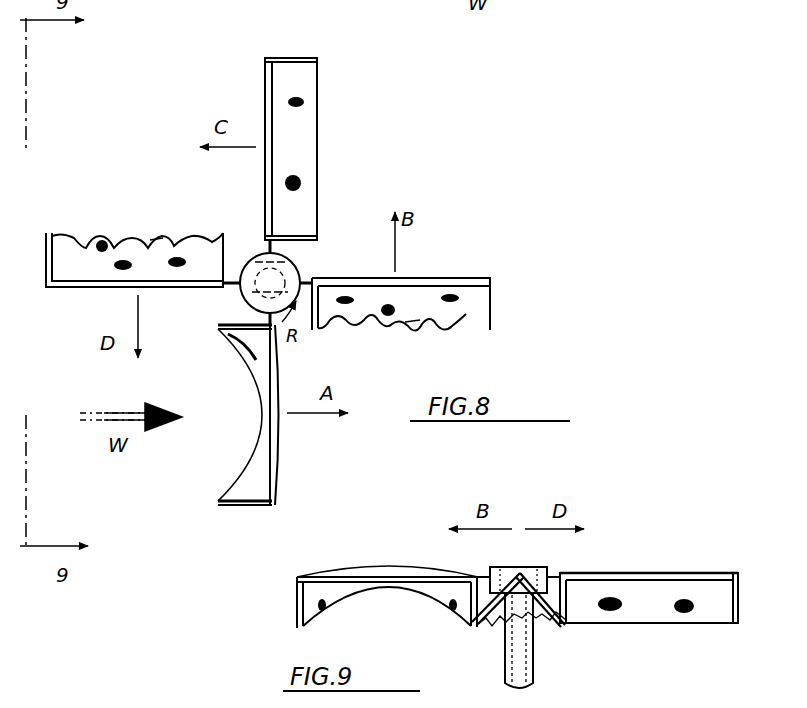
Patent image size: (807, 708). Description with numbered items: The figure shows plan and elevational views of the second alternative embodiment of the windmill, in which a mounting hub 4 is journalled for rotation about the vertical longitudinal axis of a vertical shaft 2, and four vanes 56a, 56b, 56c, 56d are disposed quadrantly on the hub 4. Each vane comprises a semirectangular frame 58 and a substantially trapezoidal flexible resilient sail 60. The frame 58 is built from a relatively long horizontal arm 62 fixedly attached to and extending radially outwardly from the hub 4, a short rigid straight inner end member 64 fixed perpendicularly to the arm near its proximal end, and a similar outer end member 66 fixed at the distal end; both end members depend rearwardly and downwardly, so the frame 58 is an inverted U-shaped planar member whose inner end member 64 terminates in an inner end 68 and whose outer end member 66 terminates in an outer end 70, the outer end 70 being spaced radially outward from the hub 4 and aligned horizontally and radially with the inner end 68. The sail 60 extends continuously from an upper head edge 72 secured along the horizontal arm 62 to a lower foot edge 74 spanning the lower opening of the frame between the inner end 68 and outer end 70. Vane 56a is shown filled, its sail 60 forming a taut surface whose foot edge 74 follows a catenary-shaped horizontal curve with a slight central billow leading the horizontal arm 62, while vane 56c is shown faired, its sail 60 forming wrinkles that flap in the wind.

In FIG. 9, the vertical shaft 2 is at (505, 668).
In FIG. 9, the mounting hub 4 is at (520, 572).
In FIG. 8, the vane 56a is at (258, 485).
In FIG. 9, the vane 56a is at (678, 584).
In FIG. 8, the vane 56b is at (416, 292).
In FIG. 8, the vane 56c is at (272, 91).
In FIG. 9, the vane 56c is at (442, 590).
In FIG. 8, the vane 56d is at (103, 232).
In FIG. 8, the semirectangular frame 58 is at (276, 464).
In FIG. 8, the flexible resilient sail 60 is at (300, 118).
In FIG. 9, the flexible resilient sail 60 is at (692, 625).
In FIG. 8, the horizontal arm 62 is at (277, 355).
In FIG. 9, the horizontal arm 62 is at (610, 556).
In FIG. 8, the inner end member 64 is at (232, 324).
In FIG. 9, the inner end member 64 is at (568, 580).
In FIG. 8, the outer end member 66 is at (254, 507).
In FIG. 9, the outer end member 66 is at (741, 582).
In FIG. 9, the inner end 68 is at (562, 625).
In FIG. 9, the outer end 70 is at (738, 622).
In FIG. 9, the head edge 72 is at (668, 555).
In FIG. 8, the foot edge 74 is at (318, 148).
In FIG. 9, the foot edge 74 is at (656, 625).